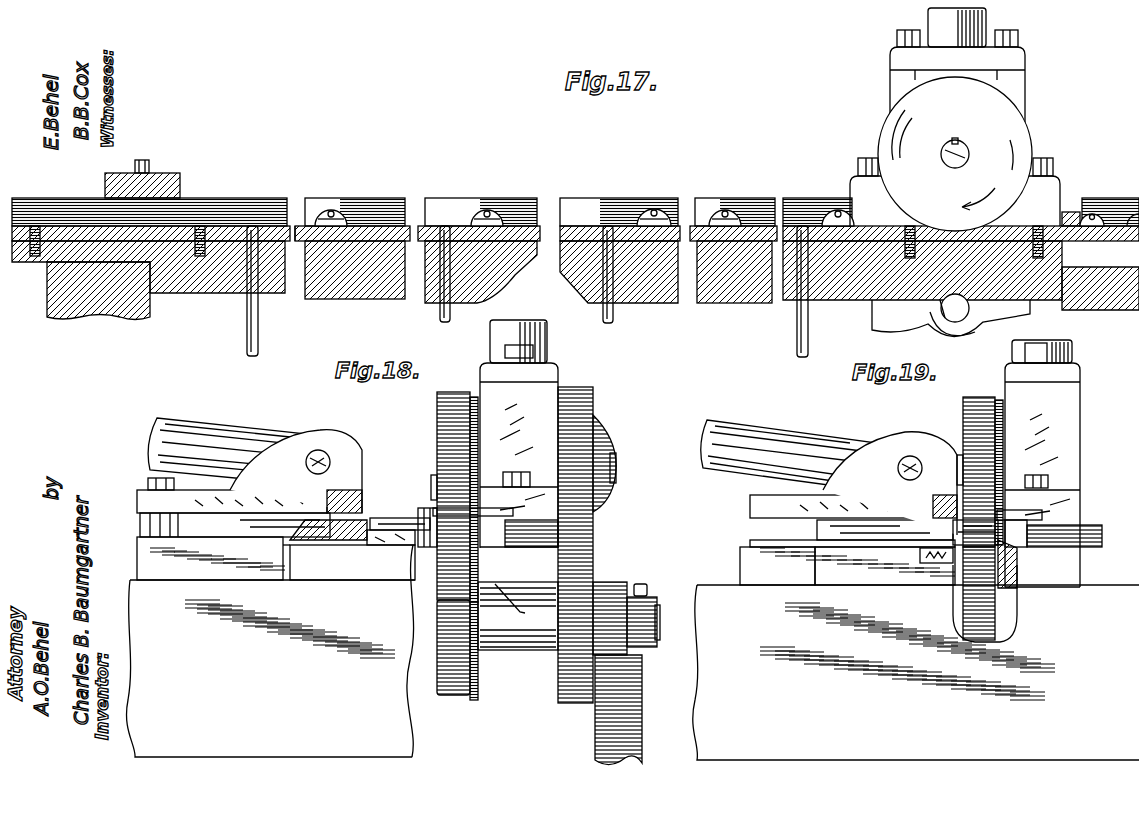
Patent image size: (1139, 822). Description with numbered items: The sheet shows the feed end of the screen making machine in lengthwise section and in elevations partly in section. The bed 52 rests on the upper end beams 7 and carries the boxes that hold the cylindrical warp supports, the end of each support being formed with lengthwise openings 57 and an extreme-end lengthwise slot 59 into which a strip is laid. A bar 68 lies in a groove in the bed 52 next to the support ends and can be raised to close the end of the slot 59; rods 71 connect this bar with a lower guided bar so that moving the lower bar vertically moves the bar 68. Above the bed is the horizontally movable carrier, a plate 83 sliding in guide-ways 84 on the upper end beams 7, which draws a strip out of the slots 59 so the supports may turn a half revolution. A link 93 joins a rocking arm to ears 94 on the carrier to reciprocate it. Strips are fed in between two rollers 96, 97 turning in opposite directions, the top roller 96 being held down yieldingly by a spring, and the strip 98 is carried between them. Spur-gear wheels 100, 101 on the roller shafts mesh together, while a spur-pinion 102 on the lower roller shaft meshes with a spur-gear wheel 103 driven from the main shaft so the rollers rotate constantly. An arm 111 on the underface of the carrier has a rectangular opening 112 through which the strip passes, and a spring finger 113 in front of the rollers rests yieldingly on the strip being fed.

In FIG. 17, the upper end beams 7 is at (46, 297).
In FIG. 18, the upper end beams 7 is at (409, 735).
In FIG. 19, the upper end beams 7 is at (697, 735).
In FIG. 17, the bed 52 is at (216, 295).
In FIG. 17, the opening 57 is at (331, 211).
In FIG. 17, the lengthwise slot 59 is at (305, 205).
In FIG. 17, the bar 68 is at (385, 226).
In FIG. 17, the rods 71 is at (258, 330).
In FIG. 18, the plate 83 is at (232, 526).
In FIG. 19, the plate 83 is at (827, 530).
In FIG. 17, the guide-ways 84 is at (170, 182).
In FIG. 18, the guide-ways 84 is at (138, 500).
In FIG. 19, the guide-ways 84 is at (752, 509).
In FIG. 18, the link 93 is at (218, 420).
In FIG. 19, the link 93 is at (771, 424).
In FIG. 18, the ears 94 is at (294, 446).
In FIG. 19, the ears 94 is at (877, 450).
In FIG. 17, the top roller 96 is at (1026, 130).
In FIG. 18, the top roller 96 is at (437, 409).
In FIG. 19, the top roller 96 is at (972, 398).
In FIG. 17, the roller 97 is at (873, 331).
In FIG. 18, the roller 97 is at (455, 696).
In FIG. 19, the roller 97 is at (1014, 628).
In FIG. 19, the strip 98 is at (957, 565).
In FIG. 18, the spur-gear wheel 100 is at (593, 394).
In FIG. 18, the spur-gear wheel 101 is at (597, 562).
In FIG. 18, the spur-pinion 102 is at (620, 592).
In FIG. 18, the spur-gear wheel 103 is at (600, 731).
In FIG. 18, the arm 111 is at (410, 519).
In FIG. 19, the arm 111 is at (958, 534).
In FIG. 18, the rectangular opening 112 is at (387, 542).
In FIG. 19, the rectangular opening 112 is at (1002, 535).
In FIG. 18, the spring finger 113 is at (470, 534).